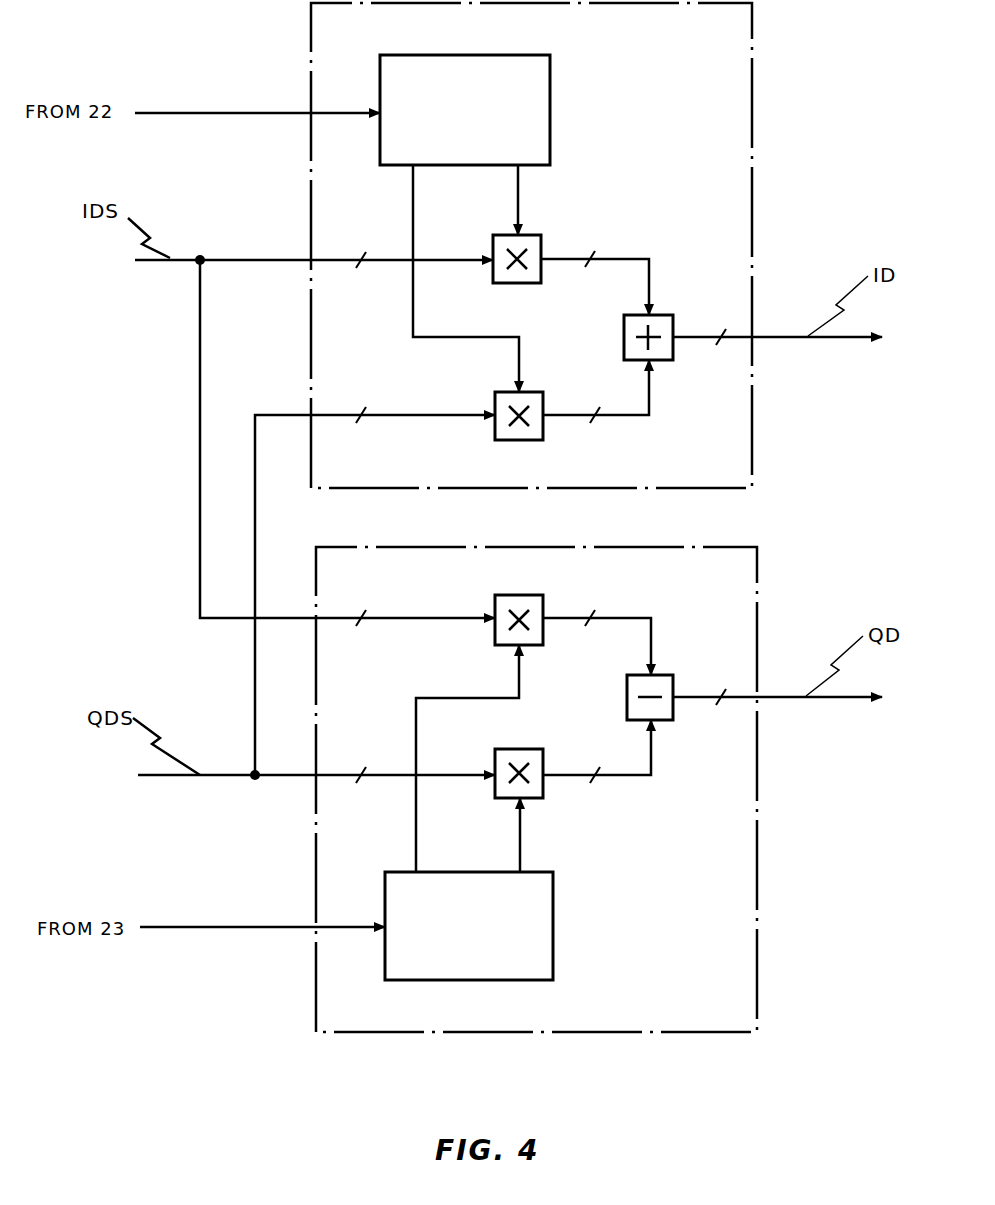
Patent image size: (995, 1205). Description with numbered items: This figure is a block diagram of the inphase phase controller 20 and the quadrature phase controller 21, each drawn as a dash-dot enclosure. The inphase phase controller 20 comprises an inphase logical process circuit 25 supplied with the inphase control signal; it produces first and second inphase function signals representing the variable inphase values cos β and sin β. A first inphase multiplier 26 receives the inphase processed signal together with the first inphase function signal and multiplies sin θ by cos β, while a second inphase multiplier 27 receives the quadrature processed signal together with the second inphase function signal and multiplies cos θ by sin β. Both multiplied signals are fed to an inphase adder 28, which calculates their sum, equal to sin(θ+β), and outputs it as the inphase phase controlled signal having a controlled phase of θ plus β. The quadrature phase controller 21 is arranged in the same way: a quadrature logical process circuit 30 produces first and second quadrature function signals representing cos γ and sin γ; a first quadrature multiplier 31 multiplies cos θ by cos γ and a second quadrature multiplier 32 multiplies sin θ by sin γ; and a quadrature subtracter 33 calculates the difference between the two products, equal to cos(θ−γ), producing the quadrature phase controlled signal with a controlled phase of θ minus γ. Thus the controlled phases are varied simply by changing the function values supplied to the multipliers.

The inphase phase controller 20 is at (752, 52).
The quadrature phase controller 21 is at (757, 955).
The inphase logical process circuit 25 is at (550, 107).
The first inphase multiplier 26 is at (541, 235).
The second inphase multiplier 27 is at (543, 440).
The inphase adder 28 is at (673, 315).
The quadrature logical process circuit 30 is at (553, 932).
The first quadrature multiplier 31 is at (543, 798).
The second quadrature multiplier 32 is at (543, 595).
The quadrature subtracter 33 is at (673, 675).